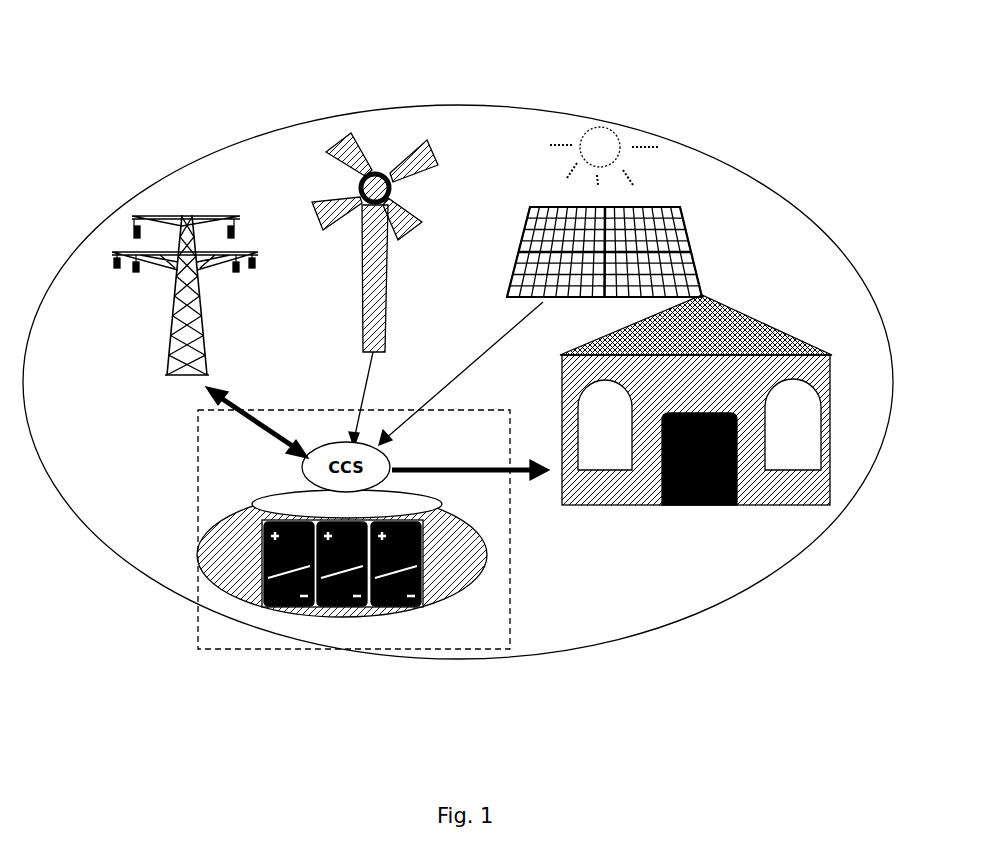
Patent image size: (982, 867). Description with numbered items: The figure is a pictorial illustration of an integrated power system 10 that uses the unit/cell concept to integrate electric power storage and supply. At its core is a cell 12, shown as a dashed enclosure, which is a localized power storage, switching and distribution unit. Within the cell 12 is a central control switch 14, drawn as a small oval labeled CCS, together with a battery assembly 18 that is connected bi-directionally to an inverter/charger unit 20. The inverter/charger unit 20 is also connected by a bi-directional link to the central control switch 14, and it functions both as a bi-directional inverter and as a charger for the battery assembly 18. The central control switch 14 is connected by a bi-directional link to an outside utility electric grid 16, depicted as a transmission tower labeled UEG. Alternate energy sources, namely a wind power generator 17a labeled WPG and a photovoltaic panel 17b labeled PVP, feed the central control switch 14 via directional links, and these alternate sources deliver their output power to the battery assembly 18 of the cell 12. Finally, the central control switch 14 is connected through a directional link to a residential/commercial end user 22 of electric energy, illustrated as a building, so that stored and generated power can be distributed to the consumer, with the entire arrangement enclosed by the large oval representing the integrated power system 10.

The integrated power system 10 is at (733, 595).
The cell 12 is at (510, 585).
The central control switch 14 is at (200, 555).
The utility electric grid 16 is at (172, 207).
The wind power generator 17a is at (412, 143).
The photovoltaic panel 17b is at (650, 200).
The battery assembly 18 is at (343, 605).
The inverter/charger unit 20 is at (508, 627).
The residential/commercial end user 22 is at (743, 310).